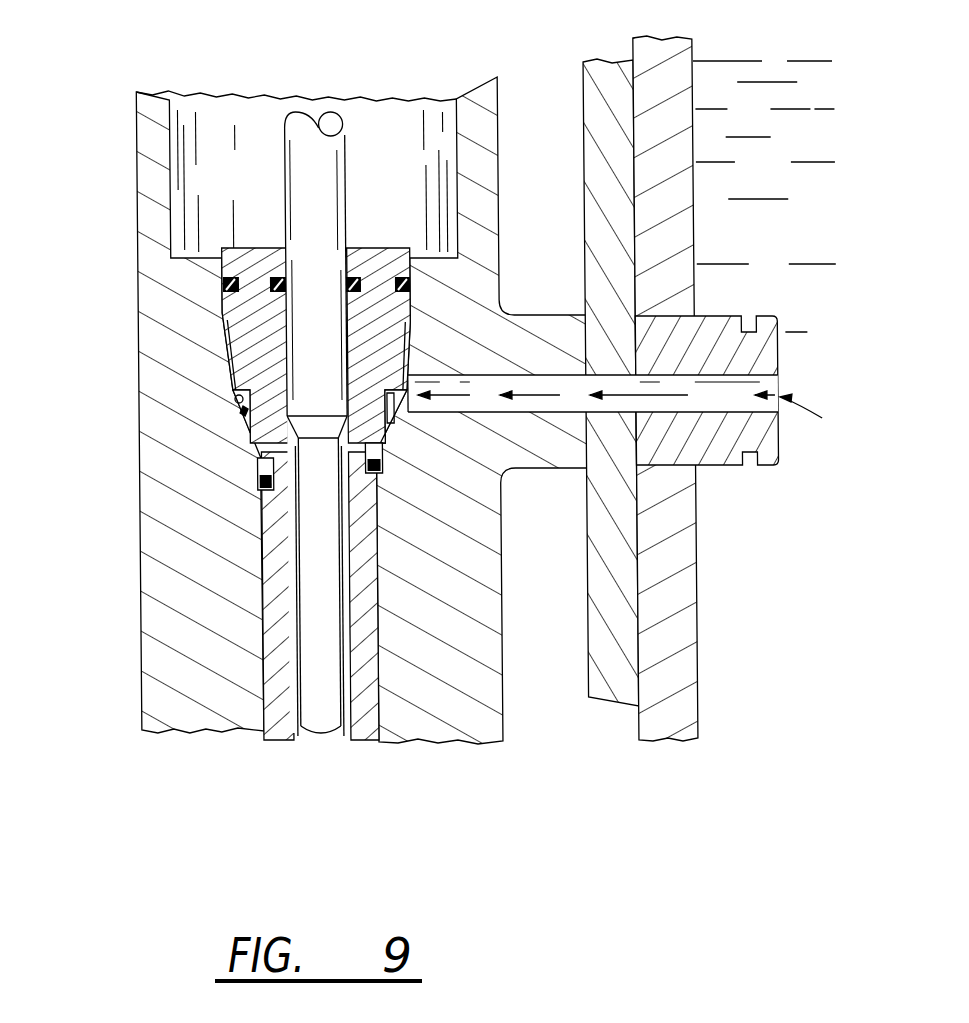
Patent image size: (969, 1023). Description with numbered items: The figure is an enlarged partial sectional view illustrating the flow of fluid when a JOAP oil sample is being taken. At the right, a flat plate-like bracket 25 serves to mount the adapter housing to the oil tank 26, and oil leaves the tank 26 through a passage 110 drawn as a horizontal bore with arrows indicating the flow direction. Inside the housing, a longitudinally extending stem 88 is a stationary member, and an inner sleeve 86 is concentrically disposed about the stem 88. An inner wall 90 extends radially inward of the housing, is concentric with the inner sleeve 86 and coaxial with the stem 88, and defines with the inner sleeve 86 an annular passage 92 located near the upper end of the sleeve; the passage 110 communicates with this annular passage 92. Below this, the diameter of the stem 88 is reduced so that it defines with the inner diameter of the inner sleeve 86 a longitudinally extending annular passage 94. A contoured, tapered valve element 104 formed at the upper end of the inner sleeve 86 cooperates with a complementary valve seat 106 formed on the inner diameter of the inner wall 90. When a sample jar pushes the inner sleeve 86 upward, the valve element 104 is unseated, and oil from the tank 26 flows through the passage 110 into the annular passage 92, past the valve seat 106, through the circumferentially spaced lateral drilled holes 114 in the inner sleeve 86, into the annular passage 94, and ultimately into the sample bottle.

The bracket 25 is at (588, 206).
The oil tank 26 is at (695, 218).
The inner sleeve 86 is at (254, 248).
The stem 88 is at (348, 208).
The inner wall 90 is at (378, 607).
The annular passage 92 is at (235, 403).
The annular passage 94 is at (296, 667).
The valve element 104 is at (503, 488).
The valve seat 106 is at (503, 527).
The passage 110 is at (697, 400).
The lateral drilled holes 114 is at (260, 463).